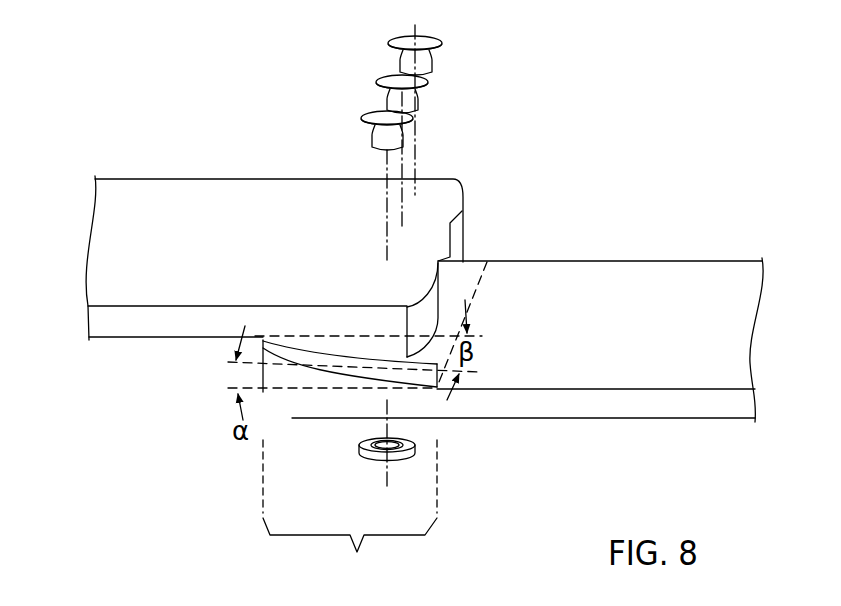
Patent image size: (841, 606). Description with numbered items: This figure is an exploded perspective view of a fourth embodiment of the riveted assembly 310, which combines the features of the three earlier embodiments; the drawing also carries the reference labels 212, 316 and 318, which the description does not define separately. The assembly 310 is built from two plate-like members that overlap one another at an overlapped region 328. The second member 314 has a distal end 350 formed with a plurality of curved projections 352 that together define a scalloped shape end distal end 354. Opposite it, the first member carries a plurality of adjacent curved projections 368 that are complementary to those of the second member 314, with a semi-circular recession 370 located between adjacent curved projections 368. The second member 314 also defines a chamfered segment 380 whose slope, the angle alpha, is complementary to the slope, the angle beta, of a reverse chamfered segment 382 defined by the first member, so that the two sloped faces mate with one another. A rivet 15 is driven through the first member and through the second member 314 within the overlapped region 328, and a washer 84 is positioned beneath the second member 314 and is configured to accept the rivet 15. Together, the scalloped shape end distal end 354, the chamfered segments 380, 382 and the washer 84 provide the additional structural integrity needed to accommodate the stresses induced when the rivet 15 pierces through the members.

The joint assembly 212 is at (76, 201).
The first panel 316 is at (133, 193).
The first panel edge face 318 is at (108, 338).
The rivet 15 is at (453, 54).
The assembly 310 is at (671, 165).
The curved projections 368 is at (463, 212).
The semi-circular recession 370 is at (450, 258).
The distal end 350 is at (263, 340).
The chamfered segment 380 is at (308, 382).
The reverse chamfered segment 382 is at (352, 352).
The scalloped shape end distal end 354 is at (263, 386).
The curved projections 352 is at (263, 385).
The washer 84 is at (416, 452).
The second member 314 is at (722, 441).
The overlapped region 328 is at (350, 512).